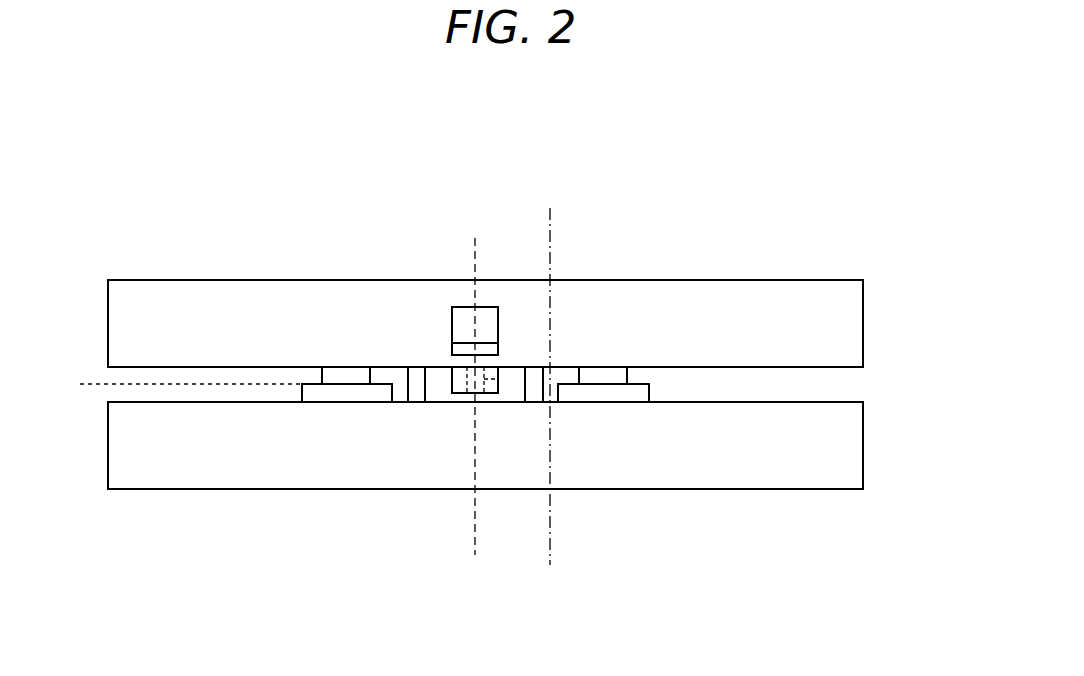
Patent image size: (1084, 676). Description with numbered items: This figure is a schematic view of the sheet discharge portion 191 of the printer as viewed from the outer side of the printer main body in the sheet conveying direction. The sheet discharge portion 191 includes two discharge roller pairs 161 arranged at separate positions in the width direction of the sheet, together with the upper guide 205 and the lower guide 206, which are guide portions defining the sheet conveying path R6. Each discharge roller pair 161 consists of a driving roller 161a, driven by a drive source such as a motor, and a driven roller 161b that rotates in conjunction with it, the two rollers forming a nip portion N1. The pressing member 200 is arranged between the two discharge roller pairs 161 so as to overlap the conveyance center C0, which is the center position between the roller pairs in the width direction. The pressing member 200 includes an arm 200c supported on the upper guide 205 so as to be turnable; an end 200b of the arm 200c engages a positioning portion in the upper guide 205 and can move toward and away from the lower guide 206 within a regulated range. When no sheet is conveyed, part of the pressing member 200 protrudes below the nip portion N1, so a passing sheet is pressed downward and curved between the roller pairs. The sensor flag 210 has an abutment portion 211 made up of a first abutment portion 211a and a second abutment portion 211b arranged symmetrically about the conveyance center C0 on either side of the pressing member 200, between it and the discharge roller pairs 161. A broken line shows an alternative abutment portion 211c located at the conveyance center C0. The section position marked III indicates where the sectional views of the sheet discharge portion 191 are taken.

The sheet discharge portion 191 is at (183, 186).
The upper guide 205 is at (855, 323).
The lower guide 206 is at (855, 447).
The discharge roller pair 161 is at (477, 386).
The driving roller 161a is at (480, 303).
The driven roller 161b is at (342, 395).
The pressing member 200 is at (419, 276).
The end of the arm 200b is at (465, 342).
The arm 200c is at (450, 368).
The sensor flag 210 is at (408, 402).
The abutment portion 211 is at (477, 409).
The first abutment portion 211a is at (422, 388).
The second abutment portion 211b is at (530, 388).
The abutment portion 211c is at (500, 373).
The conveyance center C0 is at (473, 382).
The nip portion N1 is at (172, 386).
The sheet conveying path R6 is at (845, 386).
The section line III is at (550, 217).